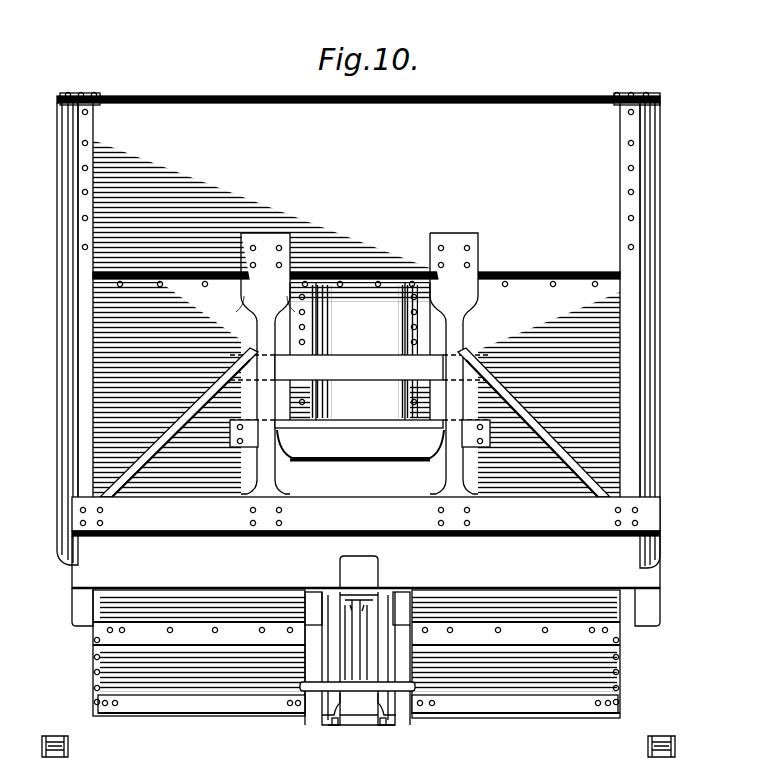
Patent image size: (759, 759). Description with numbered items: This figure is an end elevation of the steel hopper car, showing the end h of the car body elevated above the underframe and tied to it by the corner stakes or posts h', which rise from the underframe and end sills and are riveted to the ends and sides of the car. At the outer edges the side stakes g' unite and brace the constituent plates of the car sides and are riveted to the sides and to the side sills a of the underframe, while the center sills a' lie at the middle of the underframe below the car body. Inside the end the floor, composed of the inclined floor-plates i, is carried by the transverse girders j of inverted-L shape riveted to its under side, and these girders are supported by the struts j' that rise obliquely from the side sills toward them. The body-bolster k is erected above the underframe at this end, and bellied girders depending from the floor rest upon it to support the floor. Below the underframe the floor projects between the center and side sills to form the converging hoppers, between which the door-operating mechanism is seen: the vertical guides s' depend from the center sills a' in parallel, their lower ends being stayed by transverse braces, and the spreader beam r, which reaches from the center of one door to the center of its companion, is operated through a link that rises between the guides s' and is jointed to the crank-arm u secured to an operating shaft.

The ends of the car h is at (447, 178).
The corner stakes or posts h' is at (355, 300).
The side stakes g' is at (353, 335).
The transverse girders j is at (360, 362).
The struts j' is at (355, 437).
The floor-plates i is at (359, 440).
The body-bolsters k is at (366, 505).
The side sills a is at (652, 608).
The center sills a' is at (369, 588).
The vertical guides s' is at (357, 658).
The crank-arm u is at (368, 612).
The follower z' is at (366, 642).
The beam r is at (322, 690).